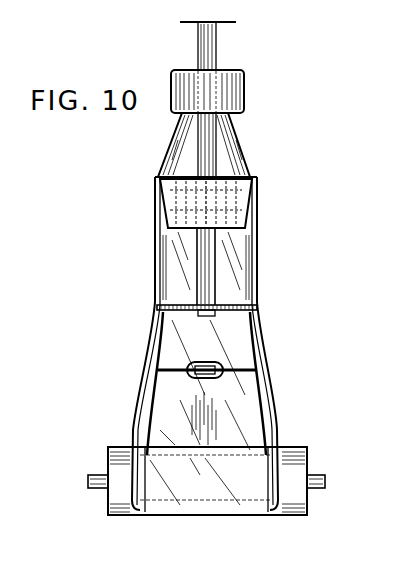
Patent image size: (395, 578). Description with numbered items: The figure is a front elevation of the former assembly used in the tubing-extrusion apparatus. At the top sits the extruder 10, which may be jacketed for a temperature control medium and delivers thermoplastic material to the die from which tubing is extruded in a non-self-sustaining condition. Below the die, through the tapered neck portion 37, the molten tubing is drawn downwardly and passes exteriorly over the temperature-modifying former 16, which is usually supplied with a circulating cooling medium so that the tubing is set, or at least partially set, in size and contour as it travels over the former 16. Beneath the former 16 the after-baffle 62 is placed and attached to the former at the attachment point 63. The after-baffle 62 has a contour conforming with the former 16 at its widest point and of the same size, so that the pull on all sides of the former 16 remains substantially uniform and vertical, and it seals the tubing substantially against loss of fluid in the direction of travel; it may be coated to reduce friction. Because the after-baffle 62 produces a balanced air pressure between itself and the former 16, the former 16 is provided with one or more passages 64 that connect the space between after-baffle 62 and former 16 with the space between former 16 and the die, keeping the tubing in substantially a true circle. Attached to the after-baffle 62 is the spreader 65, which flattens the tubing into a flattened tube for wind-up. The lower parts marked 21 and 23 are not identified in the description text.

The extruder 10 is at (245, 87).
The conical neck 37 is at (218, 138).
The temperature-modifying former 16 is at (254, 192).
The passages 64 is at (240, 216).
The attachment of after-baffle to former 63 is at (213, 232).
The after-baffle 62 is at (238, 305).
The spreader 65 is at (276, 400).
The base block 21 is at (115, 500).
The envelope wall ends 23 is at (272, 510).